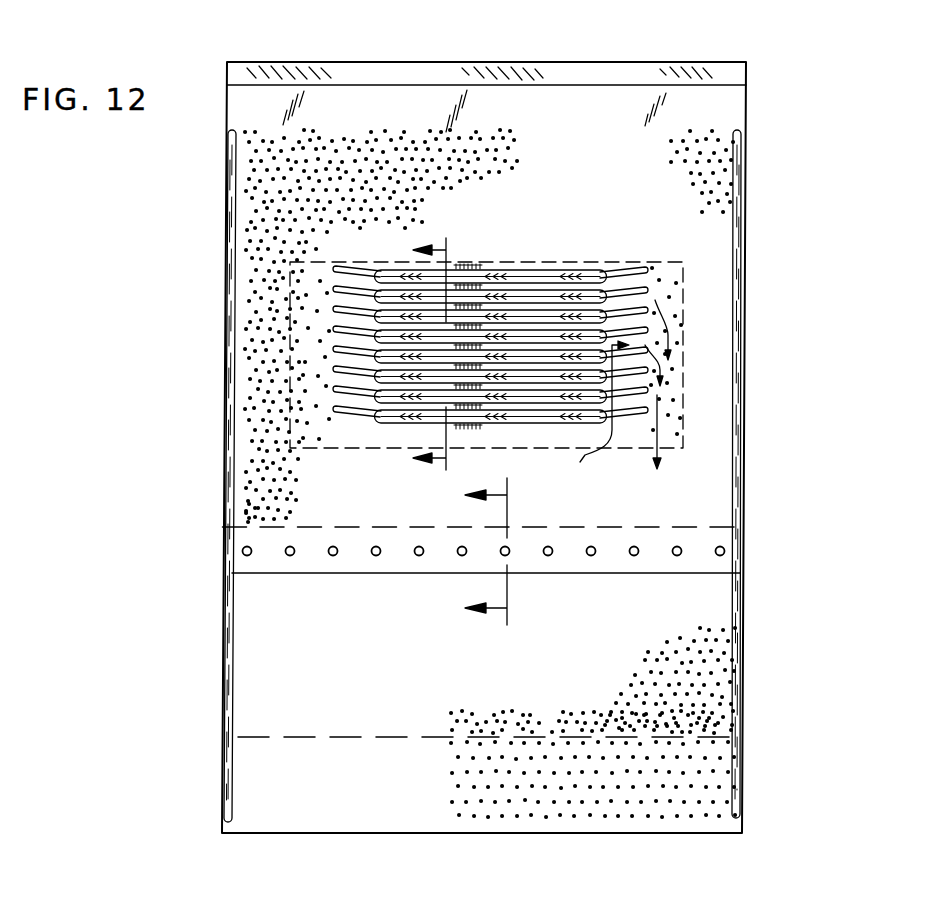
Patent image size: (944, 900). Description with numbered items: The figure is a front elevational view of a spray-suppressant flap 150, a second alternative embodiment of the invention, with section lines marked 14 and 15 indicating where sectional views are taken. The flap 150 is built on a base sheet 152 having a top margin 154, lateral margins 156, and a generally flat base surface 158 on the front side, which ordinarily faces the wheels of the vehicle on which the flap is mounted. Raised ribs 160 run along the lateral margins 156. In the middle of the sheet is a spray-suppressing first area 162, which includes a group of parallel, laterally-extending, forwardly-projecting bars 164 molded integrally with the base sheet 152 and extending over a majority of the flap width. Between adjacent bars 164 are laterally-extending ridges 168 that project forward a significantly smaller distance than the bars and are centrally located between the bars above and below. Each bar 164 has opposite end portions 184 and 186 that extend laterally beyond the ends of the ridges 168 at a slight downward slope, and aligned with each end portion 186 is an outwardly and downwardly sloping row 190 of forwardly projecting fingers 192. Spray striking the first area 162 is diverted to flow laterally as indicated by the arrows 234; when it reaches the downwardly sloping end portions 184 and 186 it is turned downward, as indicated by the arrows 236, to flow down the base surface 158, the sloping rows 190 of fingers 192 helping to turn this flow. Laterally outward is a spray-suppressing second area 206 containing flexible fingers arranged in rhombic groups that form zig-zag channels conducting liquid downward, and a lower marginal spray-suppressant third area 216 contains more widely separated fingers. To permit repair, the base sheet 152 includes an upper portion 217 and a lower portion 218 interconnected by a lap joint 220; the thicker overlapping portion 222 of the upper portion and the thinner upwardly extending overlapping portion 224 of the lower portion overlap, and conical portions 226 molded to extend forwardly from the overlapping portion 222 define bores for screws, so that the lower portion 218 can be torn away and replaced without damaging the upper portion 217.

The spray-suppressant flap 150 is at (463, 52).
The base sheet 152 is at (626, 97).
The top margin 154 is at (561, 63).
The lateral margins 156 is at (218, 362).
The base surface 158 is at (557, 207).
The raised ribs 160 is at (226, 443).
The spray-suppressing first area 162 is at (672, 420).
The bars 164 is at (544, 291).
The ridges 168 is at (609, 280).
The end portion 184 is at (334, 334).
The end portion 186 is at (636, 296).
The row 190 is at (303, 372).
The fingers 192 is at (680, 314).
The spray-suppressing second area 206 is at (712, 153).
The spray-suppressant third area 216 is at (592, 828).
The upper portion 217 is at (720, 512).
The lower portion 218 is at (716, 604).
The lap joint 220 is at (250, 566).
The overlapping portion 222 is at (293, 573).
The overlapping portion 224 is at (240, 522).
The conical portions 226 is at (412, 548).
The arrows 234 is at (609, 415).
The arrows 236 is at (668, 338).
The section line 14- 14 is at (442, 355).
The section line 15- 15 is at (498, 555).